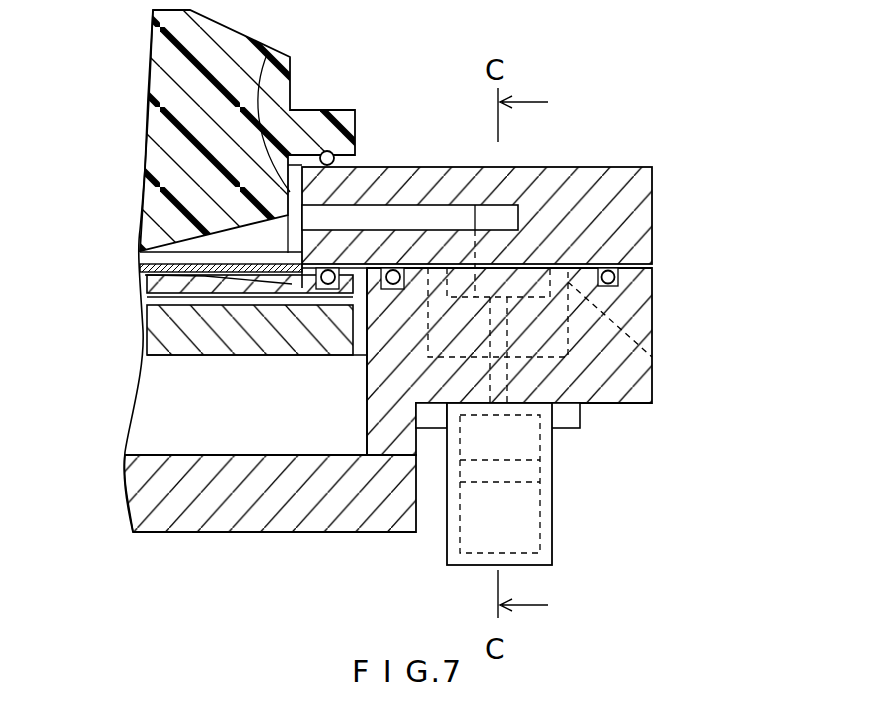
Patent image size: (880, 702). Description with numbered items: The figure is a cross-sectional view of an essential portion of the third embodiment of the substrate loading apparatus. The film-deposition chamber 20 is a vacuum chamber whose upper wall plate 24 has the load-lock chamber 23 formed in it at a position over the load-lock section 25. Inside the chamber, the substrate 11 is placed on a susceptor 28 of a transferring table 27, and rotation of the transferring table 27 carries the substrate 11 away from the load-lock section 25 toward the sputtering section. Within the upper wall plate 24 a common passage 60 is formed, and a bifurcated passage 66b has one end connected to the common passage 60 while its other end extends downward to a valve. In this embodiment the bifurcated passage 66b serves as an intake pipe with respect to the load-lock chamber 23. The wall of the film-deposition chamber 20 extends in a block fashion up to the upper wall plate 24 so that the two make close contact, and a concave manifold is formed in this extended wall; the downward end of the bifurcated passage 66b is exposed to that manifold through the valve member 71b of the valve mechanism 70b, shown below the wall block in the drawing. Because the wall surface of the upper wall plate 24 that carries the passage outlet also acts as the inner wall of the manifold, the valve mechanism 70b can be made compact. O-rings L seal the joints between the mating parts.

The substrate 11 is at (140, 266).
The film-deposition chamber 20 is at (195, 515).
The load-lock chamber 23 is at (265, 56).
The upper wall plate 24 is at (387, 167).
The load-lock section 25 is at (155, 405).
The transferring table 27 is at (155, 336).
The susceptor 28 is at (145, 287).
The common passage 60 is at (440, 213).
The bifurcated passage 66b is at (510, 213).
The valve mechanism 70b is at (557, 490).
The valve member 71b is at (655, 358).
The O-ring L is at (329, 151).